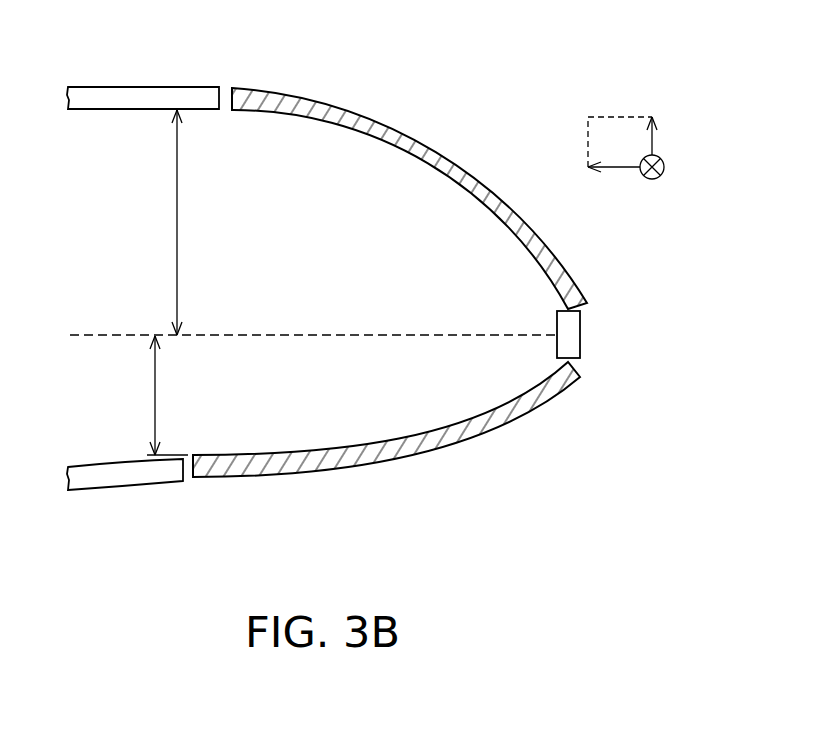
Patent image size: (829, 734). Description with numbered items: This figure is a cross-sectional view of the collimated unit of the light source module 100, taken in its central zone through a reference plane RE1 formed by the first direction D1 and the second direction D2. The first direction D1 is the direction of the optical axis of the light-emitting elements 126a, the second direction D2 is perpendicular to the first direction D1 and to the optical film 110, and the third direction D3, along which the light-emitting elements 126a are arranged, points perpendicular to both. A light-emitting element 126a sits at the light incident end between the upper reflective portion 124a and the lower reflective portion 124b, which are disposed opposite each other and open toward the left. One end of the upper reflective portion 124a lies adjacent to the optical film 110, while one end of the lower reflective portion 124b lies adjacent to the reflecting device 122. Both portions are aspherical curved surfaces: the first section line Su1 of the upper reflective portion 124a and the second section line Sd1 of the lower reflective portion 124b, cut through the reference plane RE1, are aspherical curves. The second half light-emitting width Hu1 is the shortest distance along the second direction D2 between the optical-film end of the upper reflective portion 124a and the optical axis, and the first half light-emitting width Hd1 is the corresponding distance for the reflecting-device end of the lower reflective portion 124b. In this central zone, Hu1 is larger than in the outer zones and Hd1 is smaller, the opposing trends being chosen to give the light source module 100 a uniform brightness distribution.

The light source module 100 is at (681, 577).
The optical film 110 is at (131, 97).
The reflecting device 122 is at (123, 478).
The upper reflective portion 124a is at (320, 112).
The lower reflective portion 124b is at (268, 467).
The light-emitting element 126a is at (584, 337).
The first section line Su1 is at (462, 180).
The second section line Sd1 is at (442, 418).
The second half light-emitting width Hu1 is at (155, 222).
The first half light-emitting width Hd1 is at (145, 395).
The reference plane RE1 is at (611, 135).
The first direction D1 is at (600, 169).
The second direction D2 is at (653, 117).
The third direction D3 is at (670, 169).